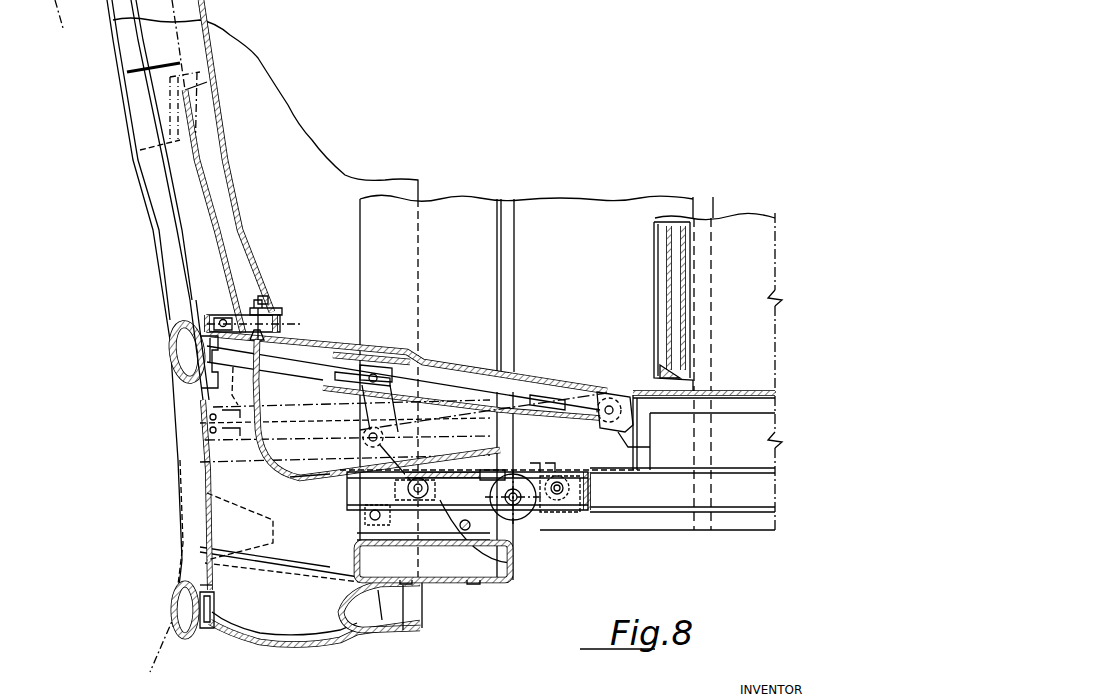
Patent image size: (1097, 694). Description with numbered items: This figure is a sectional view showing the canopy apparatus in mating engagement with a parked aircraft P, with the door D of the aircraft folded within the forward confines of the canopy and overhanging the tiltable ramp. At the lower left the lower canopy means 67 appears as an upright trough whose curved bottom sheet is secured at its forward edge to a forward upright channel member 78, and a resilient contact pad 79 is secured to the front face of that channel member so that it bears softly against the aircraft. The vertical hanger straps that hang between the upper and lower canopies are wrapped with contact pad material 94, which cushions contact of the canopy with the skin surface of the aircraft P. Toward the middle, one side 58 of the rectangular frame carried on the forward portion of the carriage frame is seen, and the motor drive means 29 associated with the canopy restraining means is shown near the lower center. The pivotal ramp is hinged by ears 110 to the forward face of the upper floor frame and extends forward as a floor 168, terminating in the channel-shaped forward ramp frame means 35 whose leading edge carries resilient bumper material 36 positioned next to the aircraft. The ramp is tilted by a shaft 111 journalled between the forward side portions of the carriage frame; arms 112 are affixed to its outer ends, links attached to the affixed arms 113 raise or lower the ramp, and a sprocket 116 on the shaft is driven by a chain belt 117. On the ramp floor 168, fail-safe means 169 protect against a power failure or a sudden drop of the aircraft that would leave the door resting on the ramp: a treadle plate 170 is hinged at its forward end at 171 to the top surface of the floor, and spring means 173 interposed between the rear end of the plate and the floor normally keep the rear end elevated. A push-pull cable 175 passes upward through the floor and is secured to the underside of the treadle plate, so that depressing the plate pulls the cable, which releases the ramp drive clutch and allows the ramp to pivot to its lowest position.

The contact pad material 94 is at (130, 120).
The aircraft P is at (65, 53).
The door D is at (228, 163).
The lower canopy means 67 is at (250, 626).
The side 58 is at (472, 261).
The floor 168 is at (340, 343).
The fail-safe means 169 is at (278, 305).
The treadle plate 170 is at (280, 313).
The hinge 171 is at (217, 322).
The spring means 173 is at (282, 323).
The ears 110 is at (608, 395).
The resilient bumper material 36 is at (171, 358).
The forward ramp frame means 35 is at (208, 378).
The push-pull cable 175 is at (285, 472).
The arms 112 is at (345, 498).
The affixed arms 113 is at (395, 428).
The shaft 111 is at (418, 485).
The sprocket 116 is at (430, 490).
The chain belt 117 is at (512, 563).
The motor drive means 29 is at (530, 522).
The resilient contact pad 79 is at (174, 611).
The forward upright channel member 78 is at (208, 630).